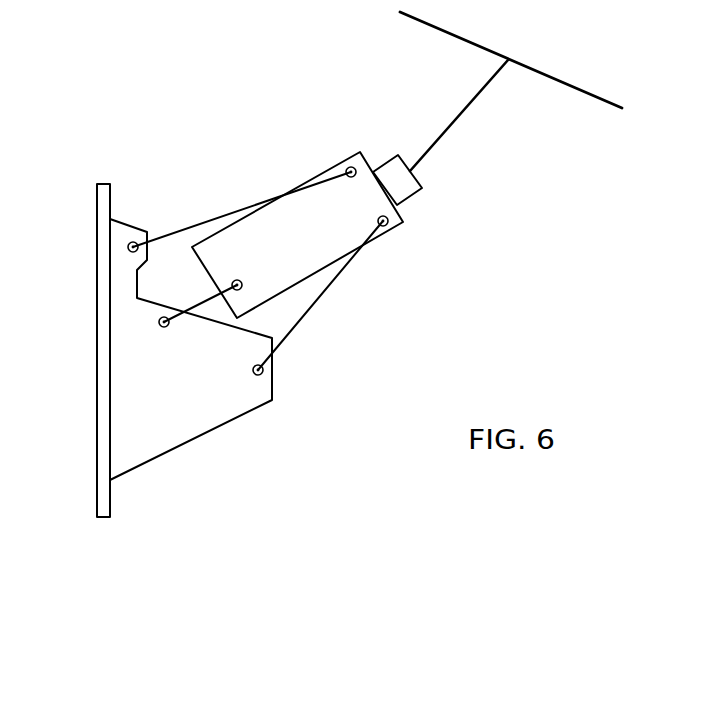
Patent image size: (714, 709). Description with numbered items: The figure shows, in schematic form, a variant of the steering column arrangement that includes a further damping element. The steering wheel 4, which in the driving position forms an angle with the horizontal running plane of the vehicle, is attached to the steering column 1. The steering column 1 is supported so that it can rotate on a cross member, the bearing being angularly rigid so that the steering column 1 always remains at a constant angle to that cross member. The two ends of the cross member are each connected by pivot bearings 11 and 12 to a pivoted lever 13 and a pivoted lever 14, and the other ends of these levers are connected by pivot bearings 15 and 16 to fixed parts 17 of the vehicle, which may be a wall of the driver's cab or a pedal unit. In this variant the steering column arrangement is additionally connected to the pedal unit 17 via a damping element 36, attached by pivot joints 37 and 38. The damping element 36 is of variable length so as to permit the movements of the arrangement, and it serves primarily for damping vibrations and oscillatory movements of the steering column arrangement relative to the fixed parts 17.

The steering column 1 is at (462, 115).
The steering wheel 4 is at (563, 80).
The pivot bearing 11 is at (350, 165).
The pivot bearing 12 is at (397, 227).
The pivoted lever 13 is at (217, 220).
The pivoted lever 14 is at (322, 298).
The pivot bearing 15 is at (128, 248).
The pivot bearing 16 is at (263, 370).
The fixed parts of the vehicle 17 is at (248, 487).
The damping element 36 is at (204, 316).
The pivot joint 37 is at (158, 322).
The pivot joint 38 is at (240, 280).